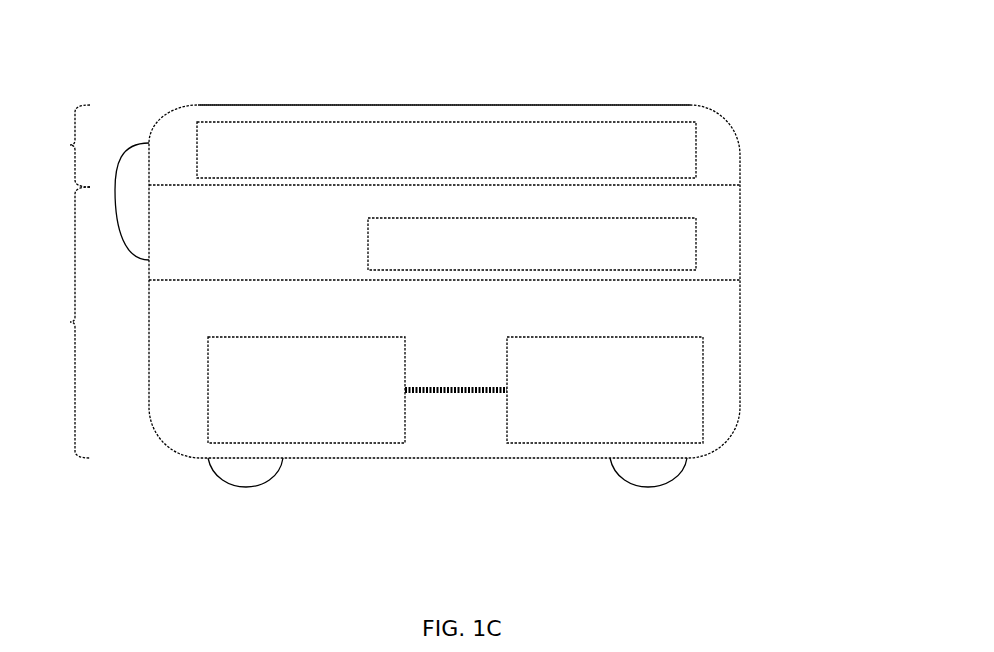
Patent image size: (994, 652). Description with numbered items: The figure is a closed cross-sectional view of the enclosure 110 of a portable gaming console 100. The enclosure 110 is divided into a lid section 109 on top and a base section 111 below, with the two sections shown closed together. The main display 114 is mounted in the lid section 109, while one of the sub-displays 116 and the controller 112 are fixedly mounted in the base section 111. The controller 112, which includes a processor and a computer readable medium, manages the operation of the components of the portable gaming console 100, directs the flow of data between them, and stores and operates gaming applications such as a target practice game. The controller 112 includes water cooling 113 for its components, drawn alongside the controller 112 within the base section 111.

The portable gaming console 100 is at (827, 82).
The lid section 109 is at (70, 145).
The enclosure 110 is at (278, 105).
The base section 111 is at (70, 322).
The controller 112 is at (638, 361).
The water cooling 113 is at (292, 375).
The main display 114 is at (507, 154).
The sub-display 116 is at (582, 253).